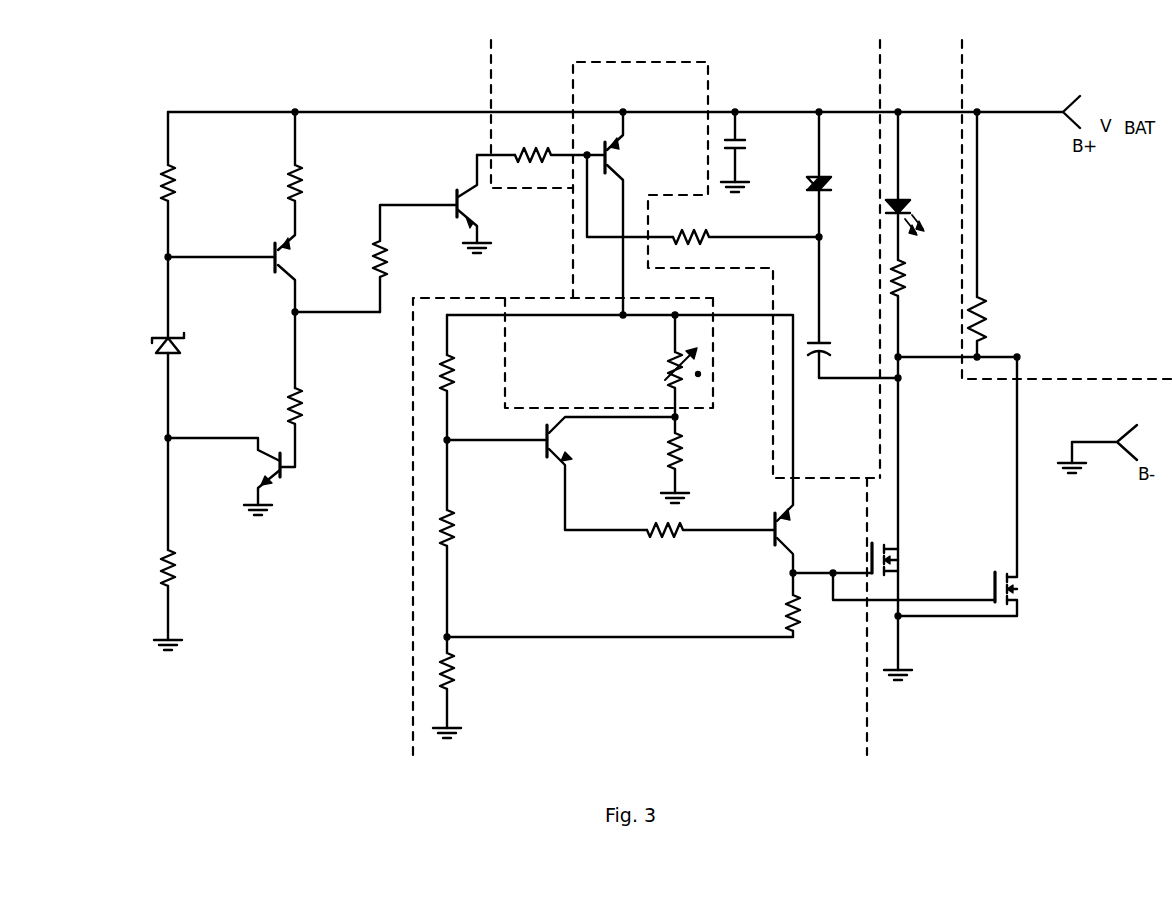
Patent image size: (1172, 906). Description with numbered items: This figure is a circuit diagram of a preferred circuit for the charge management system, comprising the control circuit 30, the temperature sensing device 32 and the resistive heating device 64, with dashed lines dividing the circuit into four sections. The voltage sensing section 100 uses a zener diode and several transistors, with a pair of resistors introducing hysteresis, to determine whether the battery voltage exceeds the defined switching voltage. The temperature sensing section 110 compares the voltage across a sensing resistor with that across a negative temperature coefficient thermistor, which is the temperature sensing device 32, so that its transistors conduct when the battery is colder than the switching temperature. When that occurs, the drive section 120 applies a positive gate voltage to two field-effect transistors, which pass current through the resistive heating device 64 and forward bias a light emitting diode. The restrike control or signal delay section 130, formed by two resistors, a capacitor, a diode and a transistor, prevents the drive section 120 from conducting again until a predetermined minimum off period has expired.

The control circuit 30 is at (95, 313).
The temperature sensing device 32 is at (609, 357).
The resistive heating device 64 is at (988, 332).
The voltage sensing section 100 is at (309, 341).
The temperature sensing section 110 is at (637, 526).
The drive section 120 is at (956, 397).
The restrike control or signal delay section 130 is at (678, 255).